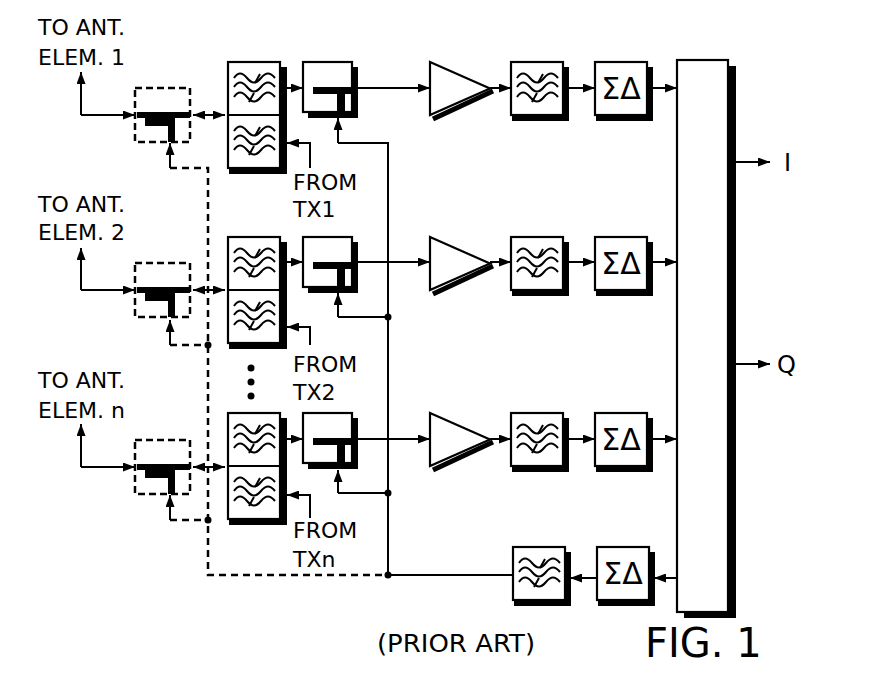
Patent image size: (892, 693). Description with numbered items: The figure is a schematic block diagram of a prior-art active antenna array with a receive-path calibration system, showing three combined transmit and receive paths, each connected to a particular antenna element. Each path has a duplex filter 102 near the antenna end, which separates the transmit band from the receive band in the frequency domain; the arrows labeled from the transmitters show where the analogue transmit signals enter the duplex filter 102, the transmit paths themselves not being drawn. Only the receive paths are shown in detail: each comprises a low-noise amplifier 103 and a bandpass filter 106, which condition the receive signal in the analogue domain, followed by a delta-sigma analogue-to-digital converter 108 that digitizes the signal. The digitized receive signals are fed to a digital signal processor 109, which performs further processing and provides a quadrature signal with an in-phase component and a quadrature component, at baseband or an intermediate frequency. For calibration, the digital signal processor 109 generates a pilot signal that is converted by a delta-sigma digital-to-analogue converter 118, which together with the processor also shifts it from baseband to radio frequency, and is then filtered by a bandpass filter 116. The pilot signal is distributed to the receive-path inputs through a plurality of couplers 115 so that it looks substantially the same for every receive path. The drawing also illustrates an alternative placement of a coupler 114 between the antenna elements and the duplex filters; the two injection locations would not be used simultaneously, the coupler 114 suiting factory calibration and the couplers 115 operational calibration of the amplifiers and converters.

The duplex filter 102 is at (245, 62).
The low-noise amplifier 103 is at (445, 68).
The bandpass filter 106 is at (527, 62).
The delta-sigma analogue-to-digital converter 108 is at (608, 62).
The digital signal processor 109 is at (690, 58).
The coupler 114 is at (148, 88).
The coupler 115 is at (350, 62).
The bandpass filter 116 is at (532, 547).
The delta-sigma digital-to-analogue converter 118 is at (613, 547).